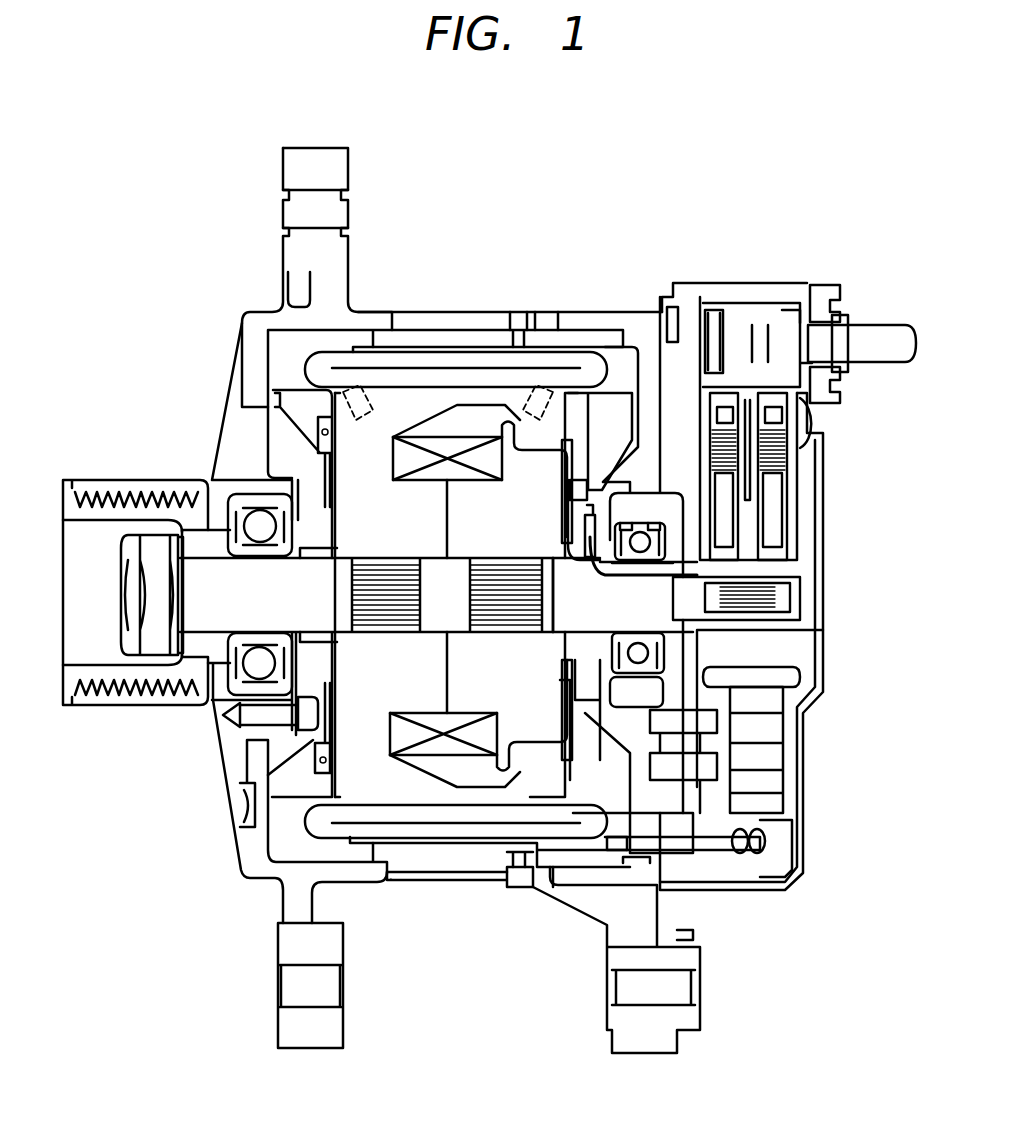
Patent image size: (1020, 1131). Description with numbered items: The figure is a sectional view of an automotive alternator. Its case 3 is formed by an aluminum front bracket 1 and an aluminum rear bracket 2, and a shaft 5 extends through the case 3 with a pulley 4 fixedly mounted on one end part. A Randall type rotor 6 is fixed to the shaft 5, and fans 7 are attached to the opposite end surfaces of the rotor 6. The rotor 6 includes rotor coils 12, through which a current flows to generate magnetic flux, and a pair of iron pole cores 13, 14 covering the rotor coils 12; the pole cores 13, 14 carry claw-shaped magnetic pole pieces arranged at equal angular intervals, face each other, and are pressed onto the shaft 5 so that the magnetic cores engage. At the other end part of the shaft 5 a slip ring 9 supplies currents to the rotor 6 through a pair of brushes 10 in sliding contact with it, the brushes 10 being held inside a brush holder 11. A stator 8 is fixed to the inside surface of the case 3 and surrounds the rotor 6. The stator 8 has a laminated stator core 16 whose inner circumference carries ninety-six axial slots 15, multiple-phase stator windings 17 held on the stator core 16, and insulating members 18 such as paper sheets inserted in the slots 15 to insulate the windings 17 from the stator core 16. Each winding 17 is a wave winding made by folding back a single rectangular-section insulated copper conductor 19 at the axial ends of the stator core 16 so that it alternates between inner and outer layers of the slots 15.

The front bracket 1 is at (362, 316).
The rear bracket 2 is at (546, 314).
The case 3 is at (512, 313).
The pulley 4 is at (105, 492).
The shaft 5 is at (212, 645).
The rotor 6 is at (348, 768).
The fans 7 is at (608, 403).
The stator 8 is at (396, 894).
The slip ring 9 is at (695, 578).
The brushes 10 is at (780, 491).
The brush holder 11 is at (812, 469).
The rotor coils 12 is at (440, 748).
The pole core 13 is at (418, 797).
The pole core 14 is at (527, 797).
The slots 15 is at (477, 850).
The stator core 16 is at (406, 868).
The multiple-phase stator windings 17 is at (592, 322).
The insulating members 18 is at (517, 312).
The conductor 19 is at (337, 595).